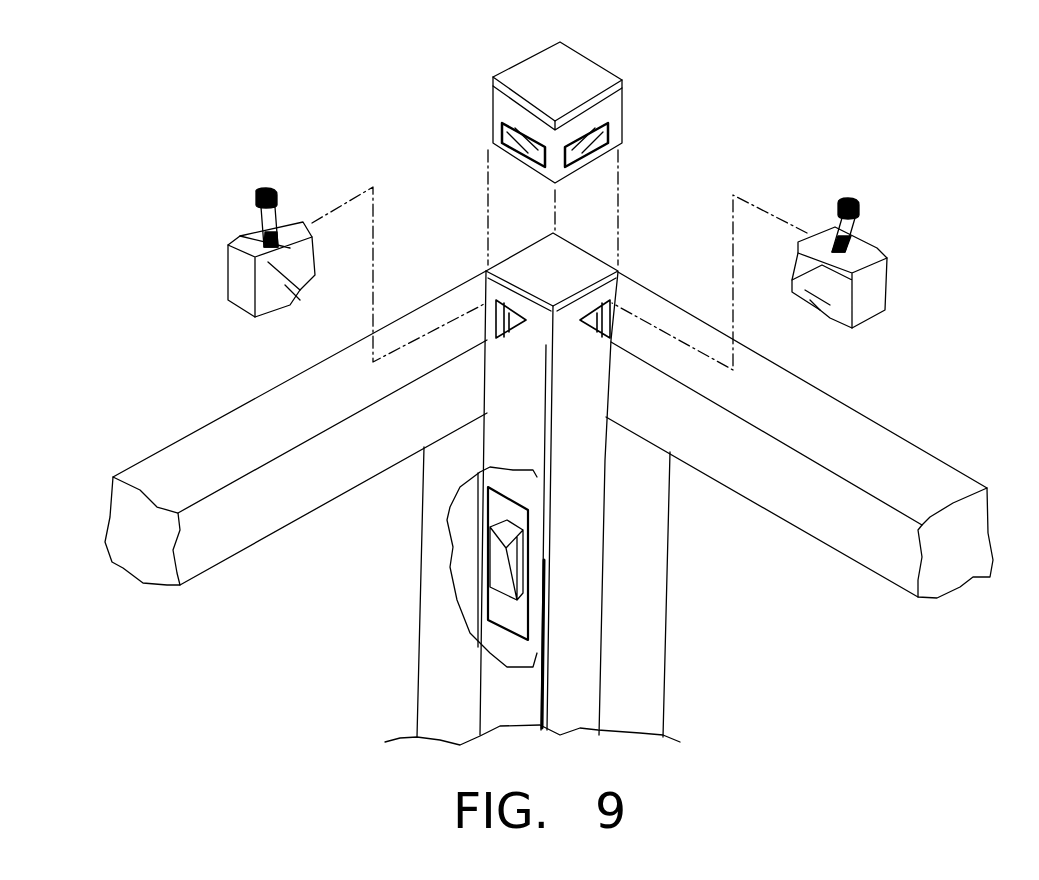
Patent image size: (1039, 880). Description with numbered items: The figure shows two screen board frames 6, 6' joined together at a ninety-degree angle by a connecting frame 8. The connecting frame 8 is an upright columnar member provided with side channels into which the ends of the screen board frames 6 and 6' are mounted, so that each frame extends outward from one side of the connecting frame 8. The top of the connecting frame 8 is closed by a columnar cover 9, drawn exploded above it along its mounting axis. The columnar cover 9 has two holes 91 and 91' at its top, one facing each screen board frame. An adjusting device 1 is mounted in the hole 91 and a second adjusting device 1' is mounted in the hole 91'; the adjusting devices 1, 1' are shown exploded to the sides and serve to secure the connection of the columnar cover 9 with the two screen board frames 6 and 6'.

The adjusting device 1 is at (279, 204).
The adjusting device 1' is at (836, 215).
The screen board frame 6 is at (280, 428).
The screen board frame 6' is at (819, 435).
The connecting frame 8 is at (573, 262).
The columnar cover 9 is at (564, 91).
The hole 91 is at (472, 136).
The hole 91' is at (646, 138).